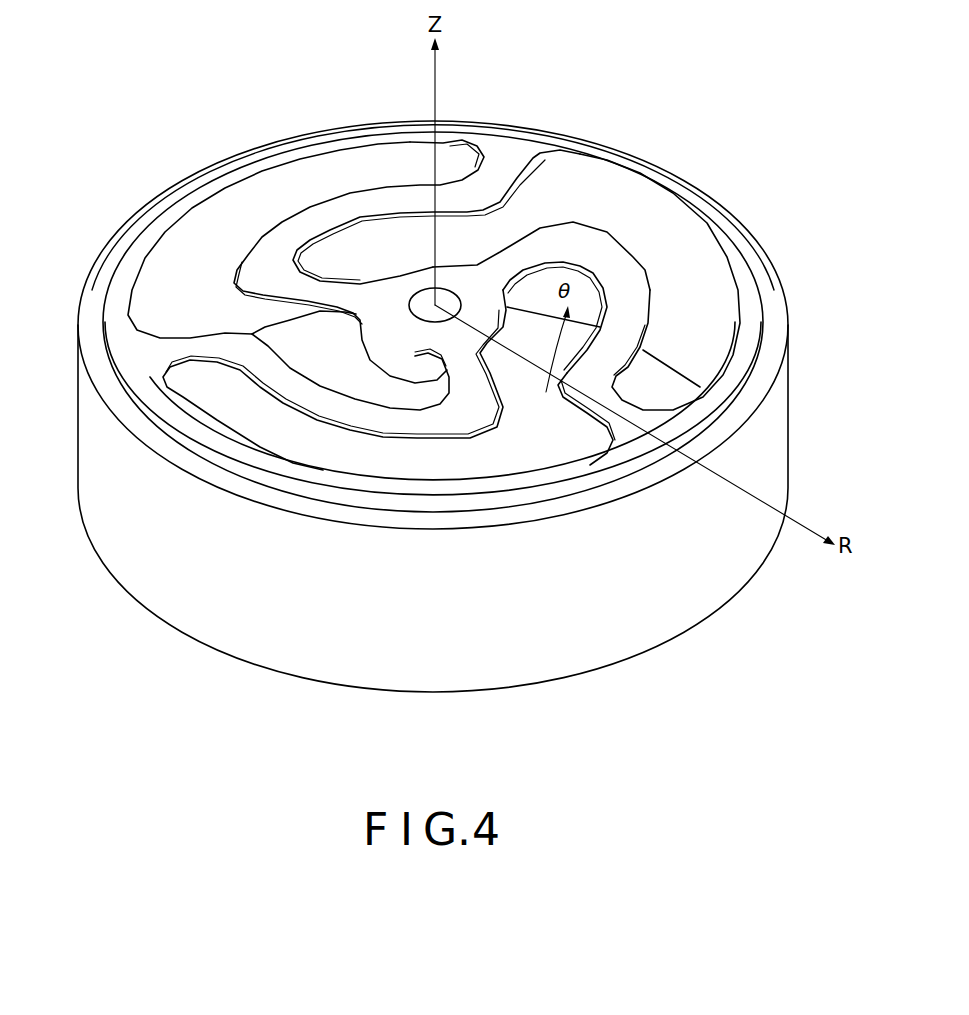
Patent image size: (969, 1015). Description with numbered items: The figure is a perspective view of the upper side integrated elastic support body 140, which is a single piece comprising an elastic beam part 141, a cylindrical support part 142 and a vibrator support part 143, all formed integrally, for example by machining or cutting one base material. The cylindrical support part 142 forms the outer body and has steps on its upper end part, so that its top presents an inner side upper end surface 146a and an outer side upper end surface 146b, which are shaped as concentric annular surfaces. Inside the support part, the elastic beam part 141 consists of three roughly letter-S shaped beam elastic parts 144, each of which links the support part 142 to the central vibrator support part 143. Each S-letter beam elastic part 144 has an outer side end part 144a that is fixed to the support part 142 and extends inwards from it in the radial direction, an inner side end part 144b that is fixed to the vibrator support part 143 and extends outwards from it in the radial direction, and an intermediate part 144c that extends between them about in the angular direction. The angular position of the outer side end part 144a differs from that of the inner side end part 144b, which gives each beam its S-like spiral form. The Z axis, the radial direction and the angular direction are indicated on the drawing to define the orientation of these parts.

The upper side integrated elastic support body 140 is at (163, 140).
The elastic beam part 141 is at (583, 211).
The cylindrical support part 142 is at (765, 428).
The vibrator support part 143 is at (420, 353).
The S-letter beam elastic part 144 is at (342, 210).
The outer side end part 144a is at (597, 407).
The inner side end part 144b is at (523, 252).
The intermediate part 144c is at (637, 303).
The inner side upper end surface 146a is at (722, 242).
The outer side upper end surface 146b is at (768, 282).